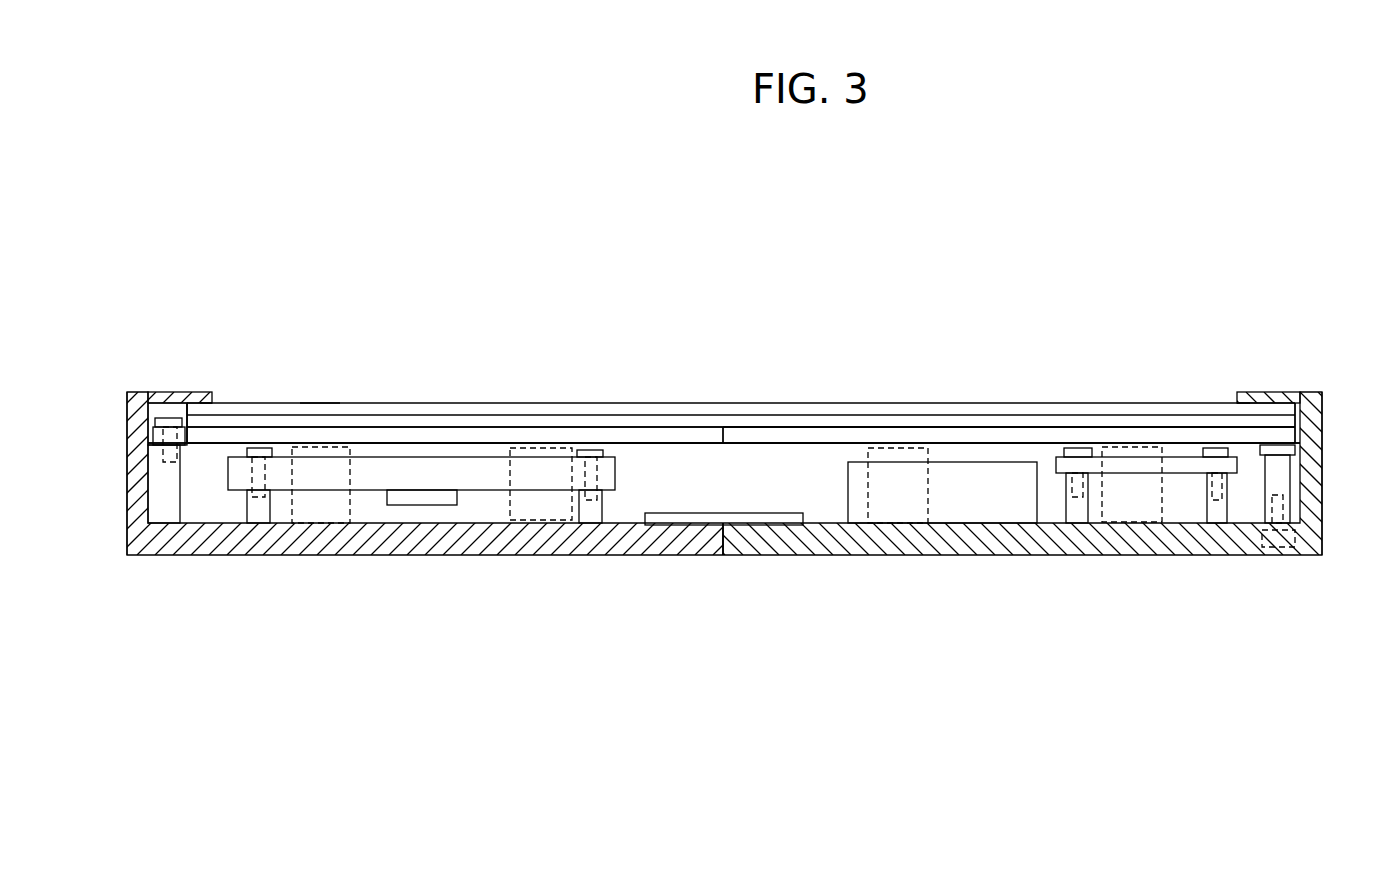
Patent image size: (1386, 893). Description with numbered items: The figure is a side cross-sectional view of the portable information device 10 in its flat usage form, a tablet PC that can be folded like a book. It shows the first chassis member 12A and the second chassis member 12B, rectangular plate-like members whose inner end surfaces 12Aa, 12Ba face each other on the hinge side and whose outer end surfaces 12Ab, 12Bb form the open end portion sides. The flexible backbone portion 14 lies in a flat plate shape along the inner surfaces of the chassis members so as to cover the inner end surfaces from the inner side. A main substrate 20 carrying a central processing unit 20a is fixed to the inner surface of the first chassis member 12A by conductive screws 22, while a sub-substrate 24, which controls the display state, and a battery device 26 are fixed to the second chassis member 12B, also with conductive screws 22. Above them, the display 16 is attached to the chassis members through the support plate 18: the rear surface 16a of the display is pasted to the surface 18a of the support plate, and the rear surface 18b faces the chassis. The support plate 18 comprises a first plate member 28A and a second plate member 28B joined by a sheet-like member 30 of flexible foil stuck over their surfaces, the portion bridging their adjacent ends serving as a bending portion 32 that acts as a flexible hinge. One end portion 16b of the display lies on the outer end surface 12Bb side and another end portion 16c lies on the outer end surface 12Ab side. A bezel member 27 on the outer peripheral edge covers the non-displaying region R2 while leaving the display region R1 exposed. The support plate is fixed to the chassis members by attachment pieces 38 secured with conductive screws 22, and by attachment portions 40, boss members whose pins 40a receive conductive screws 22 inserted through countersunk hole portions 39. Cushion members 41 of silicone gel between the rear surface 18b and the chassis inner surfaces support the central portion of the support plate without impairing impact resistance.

The portable information device 10 is at (136, 236).
The first chassis member 12A is at (222, 560).
The second chassis member 12B is at (1180, 560).
The outer end surface 12Ab is at (127, 513).
The inner end surface 12Aa is at (735, 540).
The inner end surface 12Ba is at (712, 540).
The outer end surface 12Bb is at (1322, 530).
The backbone portion 14 is at (742, 513).
The display 16 is at (972, 396).
The rear surface 16a is at (405, 417).
The one end portion 16b is at (1297, 407).
The another end portion 16c is at (187, 405).
The support plate 18 is at (887, 314).
The surface 18a is at (451, 427).
The rear surface 18b is at (1002, 445).
The main substrate 20 is at (370, 480).
The central processing unit 20a is at (440, 500).
The conductive screw 22 is at (173, 418).
The sub-substrate 24 is at (1133, 465).
The battery device 26 is at (957, 505).
The bezel member 27 is at (162, 392).
The first plate member 28A is at (642, 433).
The second plate member 28B is at (813, 433).
The sheet-like member 30 is at (885, 433).
The bending portion 32 is at (714, 456).
The attachment piece 38 is at (155, 435).
The countersunk hole portion 39 is at (1283, 555).
The attachment portion 40 is at (1295, 450).
The pin 40a is at (1282, 475).
The cushion member 41 is at (287, 523).
The display region R1 is at (318, 404).
The non-displaying region R2 is at (203, 403).